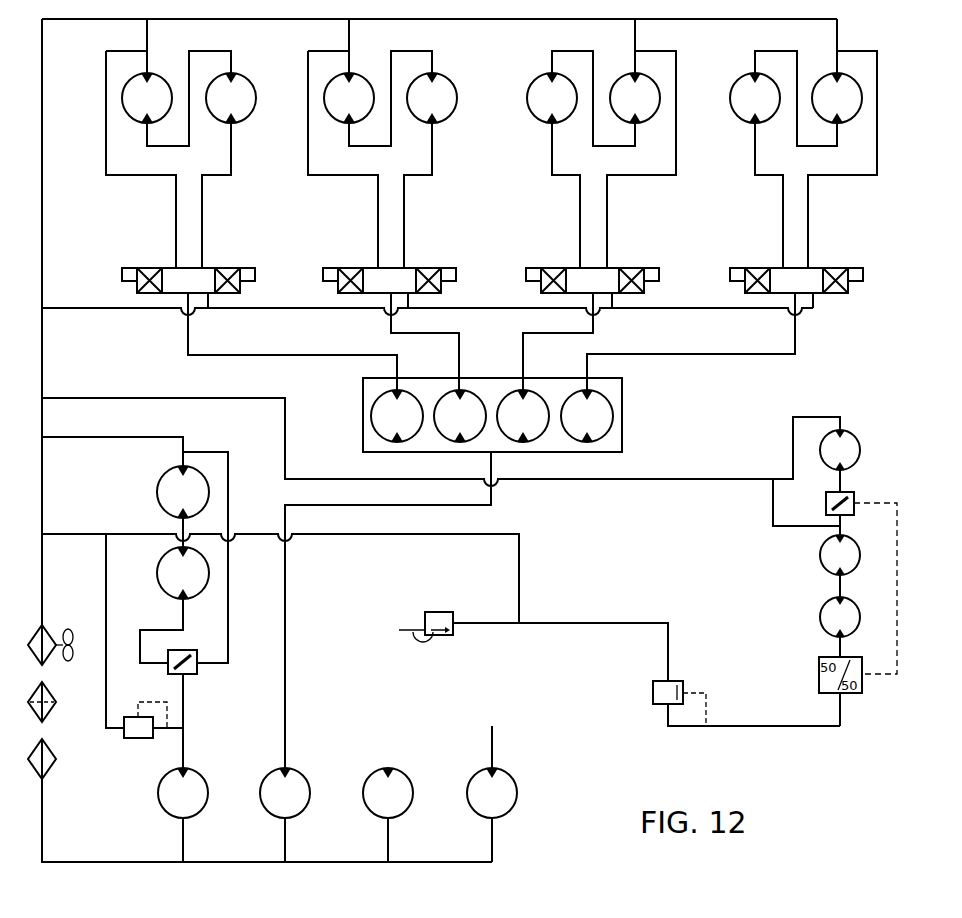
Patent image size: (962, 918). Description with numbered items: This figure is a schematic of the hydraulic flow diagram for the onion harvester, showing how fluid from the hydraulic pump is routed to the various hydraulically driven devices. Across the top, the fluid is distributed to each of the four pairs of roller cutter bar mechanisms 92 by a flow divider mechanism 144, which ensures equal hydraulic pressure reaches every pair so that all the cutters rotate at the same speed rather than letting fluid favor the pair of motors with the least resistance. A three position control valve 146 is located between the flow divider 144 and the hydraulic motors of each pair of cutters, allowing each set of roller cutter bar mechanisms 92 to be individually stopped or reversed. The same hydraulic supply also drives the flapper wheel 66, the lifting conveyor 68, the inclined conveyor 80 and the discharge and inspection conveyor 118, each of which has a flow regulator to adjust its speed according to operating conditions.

The roller cutter bar mechanism 92 is at (840, 100).
The three position control valve 146 is at (862, 276).
The flow divider mechanism 144 is at (622, 413).
The discharge and inspection conveyor 118 is at (859, 446).
The inclined conveyor 80 is at (172, 492).
The lifting conveyor 68 is at (172, 573).
The flapper wheel 66 is at (830, 617).